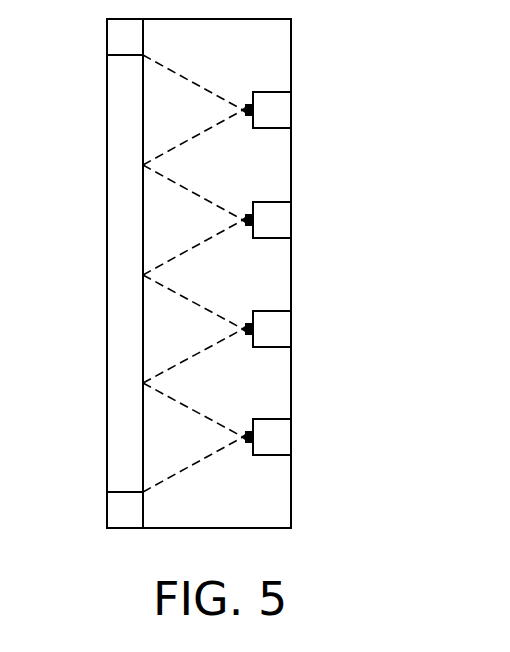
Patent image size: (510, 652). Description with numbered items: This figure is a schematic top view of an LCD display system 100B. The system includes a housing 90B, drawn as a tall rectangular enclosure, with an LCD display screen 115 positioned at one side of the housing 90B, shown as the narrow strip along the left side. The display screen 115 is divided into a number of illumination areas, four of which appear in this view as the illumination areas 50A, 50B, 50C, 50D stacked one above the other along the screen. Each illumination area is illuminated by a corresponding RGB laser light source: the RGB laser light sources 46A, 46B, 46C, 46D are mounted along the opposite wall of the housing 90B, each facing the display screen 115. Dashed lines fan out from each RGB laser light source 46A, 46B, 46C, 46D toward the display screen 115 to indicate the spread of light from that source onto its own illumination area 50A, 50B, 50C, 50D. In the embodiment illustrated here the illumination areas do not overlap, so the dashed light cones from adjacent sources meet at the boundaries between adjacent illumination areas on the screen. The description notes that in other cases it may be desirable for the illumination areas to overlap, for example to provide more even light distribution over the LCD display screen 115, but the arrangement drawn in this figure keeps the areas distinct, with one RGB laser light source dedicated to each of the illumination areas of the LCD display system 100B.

The LCD display system 100B is at (350, 145).
The housing 90B is at (291, 60).
The LCD display screen 115 is at (85, 273).
The illumination area 50D is at (94, 110).
The illumination area 50C is at (93, 220).
The illumination area 50B is at (94, 329).
The illumination area 50A is at (94, 437).
The RGB laser light source 46D is at (273, 110).
The RGB laser light source 46C is at (273, 220).
The RGB laser light source 46B is at (273, 329).
The RGB laser light source 46A is at (273, 437).